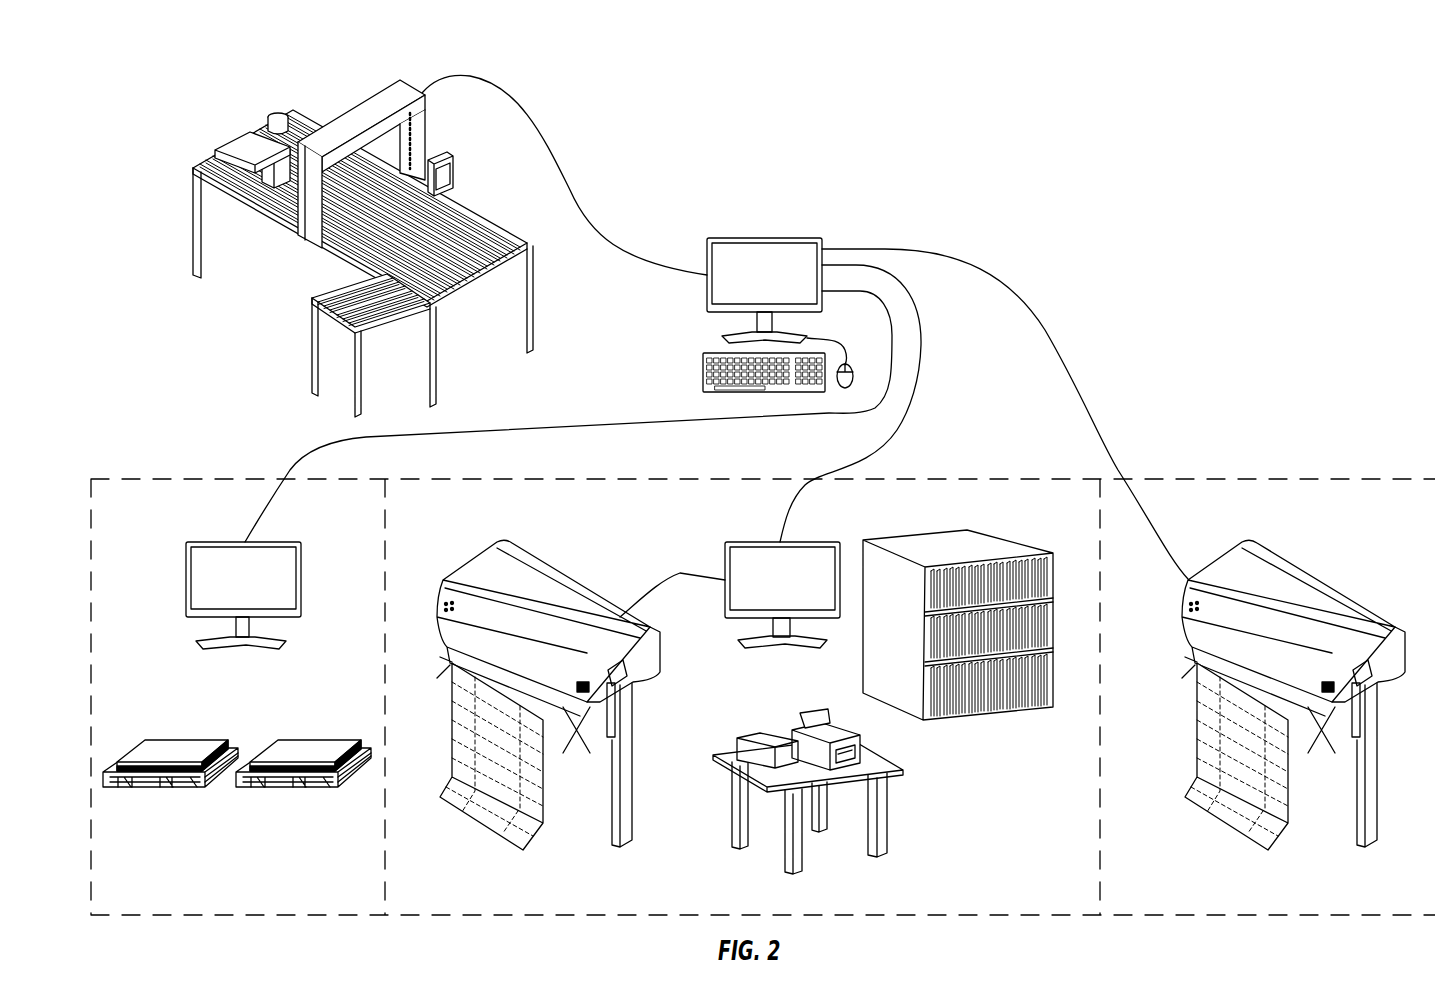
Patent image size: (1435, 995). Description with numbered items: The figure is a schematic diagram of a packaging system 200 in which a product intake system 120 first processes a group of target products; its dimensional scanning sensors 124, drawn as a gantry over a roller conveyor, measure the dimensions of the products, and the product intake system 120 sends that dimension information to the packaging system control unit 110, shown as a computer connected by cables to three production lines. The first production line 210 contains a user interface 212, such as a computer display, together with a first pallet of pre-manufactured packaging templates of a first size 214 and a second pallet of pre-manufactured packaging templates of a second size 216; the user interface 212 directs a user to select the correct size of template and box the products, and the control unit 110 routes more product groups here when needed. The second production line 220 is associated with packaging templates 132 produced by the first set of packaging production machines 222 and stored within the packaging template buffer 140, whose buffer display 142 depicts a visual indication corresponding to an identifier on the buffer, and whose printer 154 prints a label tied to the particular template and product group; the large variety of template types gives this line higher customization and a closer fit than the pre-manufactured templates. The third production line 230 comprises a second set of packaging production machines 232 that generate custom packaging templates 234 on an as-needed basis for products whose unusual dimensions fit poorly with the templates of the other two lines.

The packaging system 200 is at (1113, 201).
The product intake system 120 is at (264, 88).
The dimensional scanning sensors 124 is at (372, 106).
The packaging templates 132 is at (237, 131).
The packaging system control unit 110 is at (740, 238).
The first production line 210 is at (237, 723).
The user interface 212 is at (303, 576).
The first pallet of pre-manufactured packaging templates of a first size 214 is at (190, 742).
The second pallet of pre-manufactured packaging templates of a second size 216 is at (323, 742).
The second production line 220 is at (759, 702).
The first set of packaging production machines 222 is at (576, 565).
The buffer display 142 is at (748, 542).
The packaging template buffer 140 is at (1016, 531).
The printer 154 is at (860, 737).
The third production line 230 is at (1280, 722).
The second set of packaging production machines 232 is at (1306, 576).
The custom packaging templates 234 is at (1273, 832).